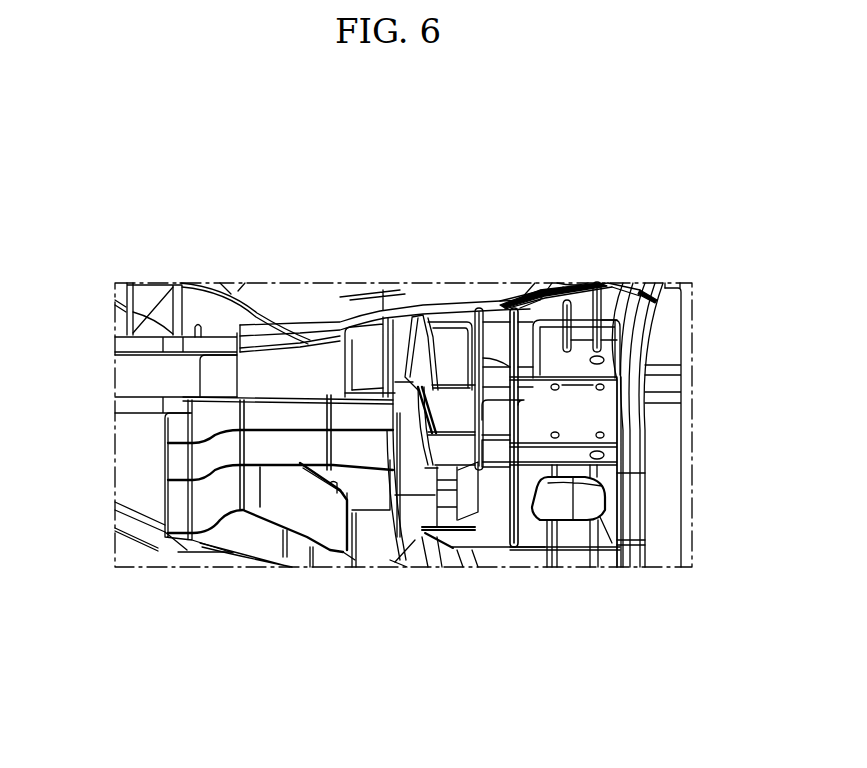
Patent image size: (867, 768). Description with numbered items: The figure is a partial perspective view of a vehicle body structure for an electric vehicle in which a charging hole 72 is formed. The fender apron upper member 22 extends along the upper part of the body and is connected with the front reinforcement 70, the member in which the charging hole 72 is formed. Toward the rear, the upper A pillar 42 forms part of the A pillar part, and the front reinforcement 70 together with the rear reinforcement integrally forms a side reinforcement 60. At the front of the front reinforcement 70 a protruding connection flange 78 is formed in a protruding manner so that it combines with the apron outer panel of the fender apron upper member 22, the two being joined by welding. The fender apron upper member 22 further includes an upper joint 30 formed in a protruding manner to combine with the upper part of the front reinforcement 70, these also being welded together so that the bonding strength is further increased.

The fender apron upper member 22 is at (156, 258).
The upper joint 30 is at (282, 372).
The upper A pillar 42 is at (467, 288).
The side reinforcement 60 is at (373, 588).
The front reinforcement 70 is at (318, 602).
The charging hole 72 is at (313, 500).
The protruding connection flange 78 is at (178, 504).